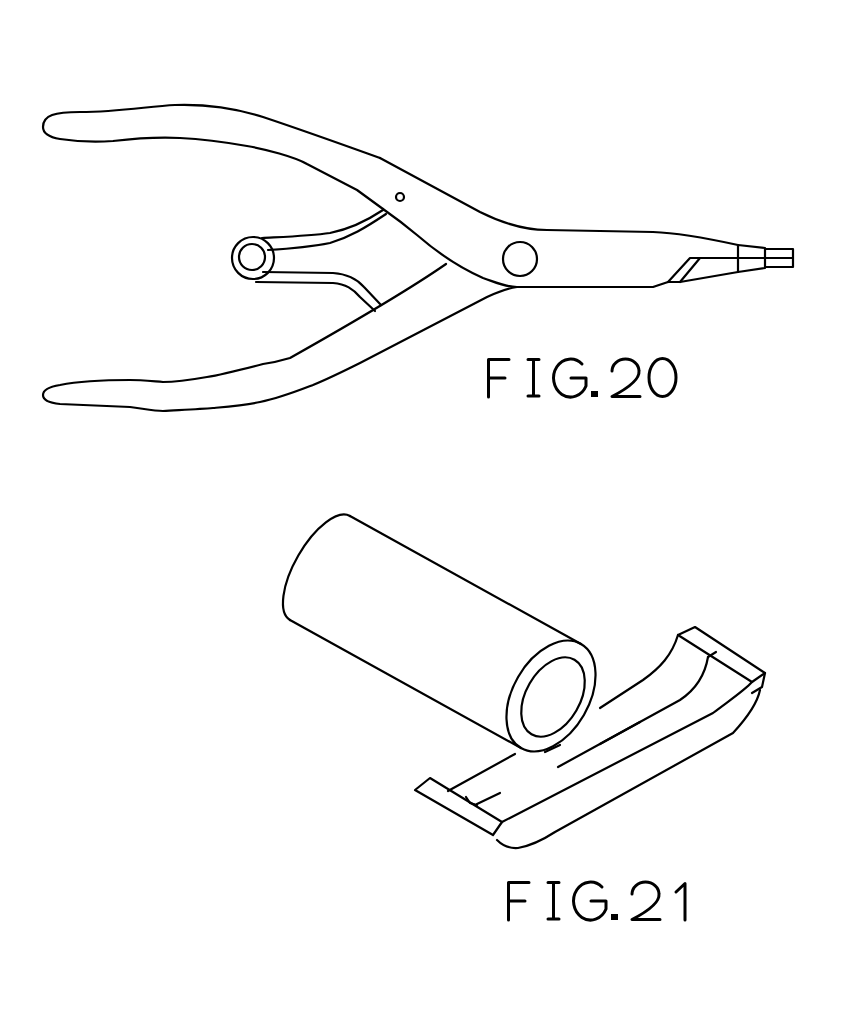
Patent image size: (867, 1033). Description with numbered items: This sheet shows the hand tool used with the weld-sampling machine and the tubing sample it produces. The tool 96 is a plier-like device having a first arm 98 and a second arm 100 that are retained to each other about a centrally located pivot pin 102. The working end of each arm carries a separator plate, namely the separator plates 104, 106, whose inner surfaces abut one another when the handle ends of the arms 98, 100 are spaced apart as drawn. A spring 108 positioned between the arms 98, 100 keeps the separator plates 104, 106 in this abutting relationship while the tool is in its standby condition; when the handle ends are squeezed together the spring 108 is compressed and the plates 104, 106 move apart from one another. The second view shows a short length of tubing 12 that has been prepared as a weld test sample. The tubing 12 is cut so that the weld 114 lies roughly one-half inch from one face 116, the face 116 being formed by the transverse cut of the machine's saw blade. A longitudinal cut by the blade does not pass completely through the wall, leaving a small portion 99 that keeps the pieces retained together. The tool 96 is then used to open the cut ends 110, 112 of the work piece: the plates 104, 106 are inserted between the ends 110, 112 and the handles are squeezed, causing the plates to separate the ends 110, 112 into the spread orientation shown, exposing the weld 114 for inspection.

In FIG. 20, the tool 96 is at (372, 146).
In FIG. 20, the first arm 98 is at (204, 107).
In FIG. 20, the second arm 100 is at (190, 412).
In FIG. 20, the pivot pin 102 is at (527, 243).
In FIG. 20, the separator plate 104 is at (777, 325).
In FIG. 20, the separator plate 106 is at (750, 314).
In FIG. 20, the spring 108 is at (311, 233).
In FIG. 21, the tubing 12 is at (472, 566).
In FIG. 21, the small portion 99 is at (557, 733).
In FIG. 21, the cut end 110 is at (710, 642).
In FIG. 21, the cut end 112 is at (463, 822).
In FIG. 21, the weld 114 is at (657, 727).
In FIG. 21, the face 116 is at (602, 670).